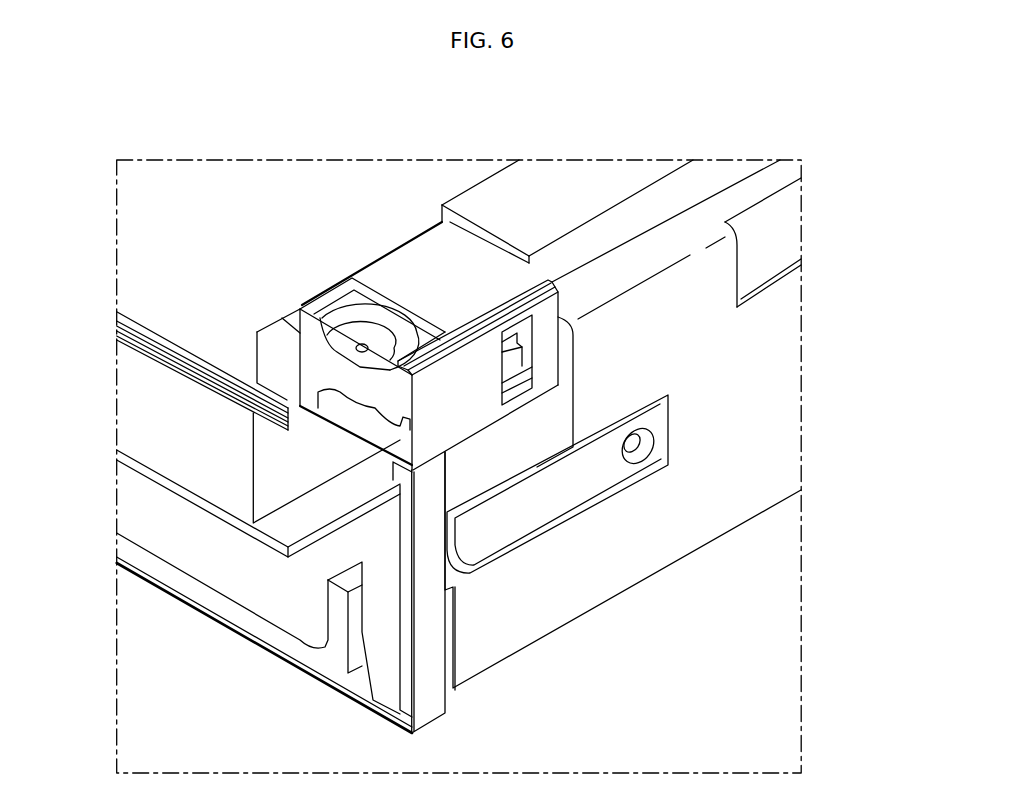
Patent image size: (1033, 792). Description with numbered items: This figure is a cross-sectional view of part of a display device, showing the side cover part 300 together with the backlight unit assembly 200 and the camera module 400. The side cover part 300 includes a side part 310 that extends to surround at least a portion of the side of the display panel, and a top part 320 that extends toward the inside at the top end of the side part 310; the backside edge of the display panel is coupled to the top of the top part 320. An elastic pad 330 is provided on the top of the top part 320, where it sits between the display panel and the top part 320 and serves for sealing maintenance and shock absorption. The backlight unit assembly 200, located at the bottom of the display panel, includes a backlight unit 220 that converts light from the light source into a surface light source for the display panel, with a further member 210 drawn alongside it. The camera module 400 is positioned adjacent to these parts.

The backlight unit assembly 200 is at (104, 607).
The base frame 210 is at (242, 617).
The backlight unit 220 is at (170, 420).
The side cover part 300 is at (825, 277).
The side part 310 is at (745, 365).
The top part 320 is at (701, 233).
The elastic pad 330 is at (578, 188).
The camera module 400 is at (423, 397).